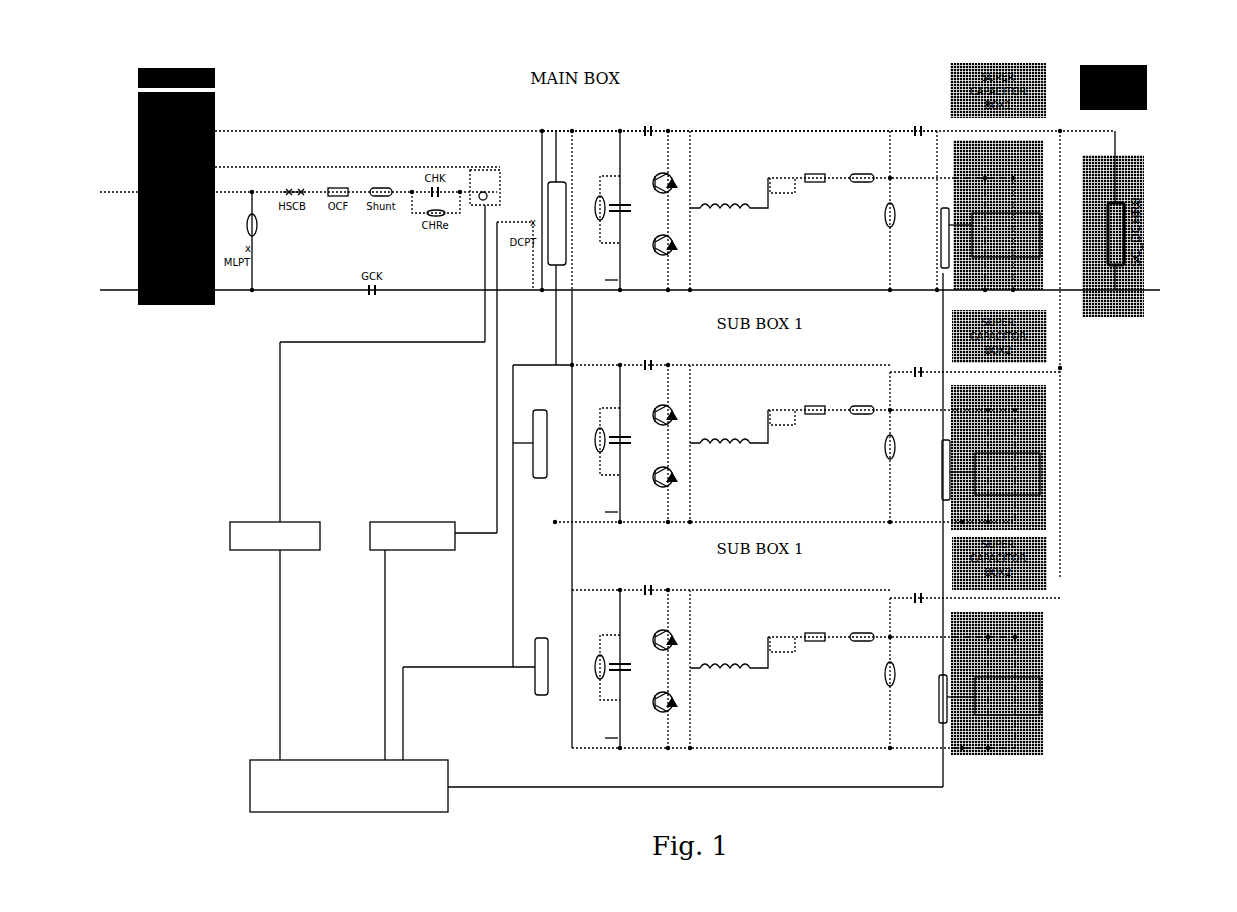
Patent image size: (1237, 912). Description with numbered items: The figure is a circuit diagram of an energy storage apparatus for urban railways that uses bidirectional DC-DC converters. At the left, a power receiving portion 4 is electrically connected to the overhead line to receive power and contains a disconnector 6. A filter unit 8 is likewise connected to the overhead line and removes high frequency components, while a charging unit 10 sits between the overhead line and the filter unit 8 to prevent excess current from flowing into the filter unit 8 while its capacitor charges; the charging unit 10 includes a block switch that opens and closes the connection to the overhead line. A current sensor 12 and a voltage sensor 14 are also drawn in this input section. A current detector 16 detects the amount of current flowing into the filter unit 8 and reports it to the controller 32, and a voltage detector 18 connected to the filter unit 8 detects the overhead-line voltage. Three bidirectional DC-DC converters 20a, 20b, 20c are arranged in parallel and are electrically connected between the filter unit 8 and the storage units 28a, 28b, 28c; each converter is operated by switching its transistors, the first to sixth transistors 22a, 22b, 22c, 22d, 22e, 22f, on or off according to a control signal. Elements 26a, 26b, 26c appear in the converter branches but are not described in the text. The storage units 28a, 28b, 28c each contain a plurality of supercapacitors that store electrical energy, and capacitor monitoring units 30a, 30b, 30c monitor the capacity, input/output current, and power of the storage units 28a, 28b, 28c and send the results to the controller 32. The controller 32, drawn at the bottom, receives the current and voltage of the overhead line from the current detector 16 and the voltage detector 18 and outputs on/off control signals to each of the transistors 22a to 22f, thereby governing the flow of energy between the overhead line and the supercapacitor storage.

The power receiving portion 4 is at (178, 307).
The disconnector 6 is at (180, 195).
The filter unit 8 is at (188, 93).
The charging unit 10 is at (338, 118).
The current sensor 12 is at (480, 165).
The voltage sensor 14 is at (540, 130).
The current detector 16 is at (295, 525).
The voltage detector 18 is at (408, 532).
The bidirectional DC-DC converter 20a is at (780, 150).
The bidirectional DC-DC converter 20b is at (913, 353).
The bidirectional DC-DC converter 20c is at (915, 732).
The first transistor 22a is at (668, 162).
The second transistor 22b is at (683, 243).
The third transistor 22c is at (668, 405).
The fourth transistor 22d is at (673, 477).
The fifth transistor 22e is at (667, 630).
The sixth transistor 22f is at (677, 702).
The current sensor 26a is at (562, 212).
The current sensor 26b is at (535, 480).
The current sensor 26c is at (538, 688).
The storage unit 28a is at (1045, 292).
The storage unit 28b is at (1022, 411).
The storage unit 28c is at (1043, 628).
The capacitor monitoring unit 30a is at (949, 212).
The capacitor monitoring unit 30b is at (950, 488).
The capacitor monitoring unit 30c is at (948, 715).
The controller 32 is at (398, 812).